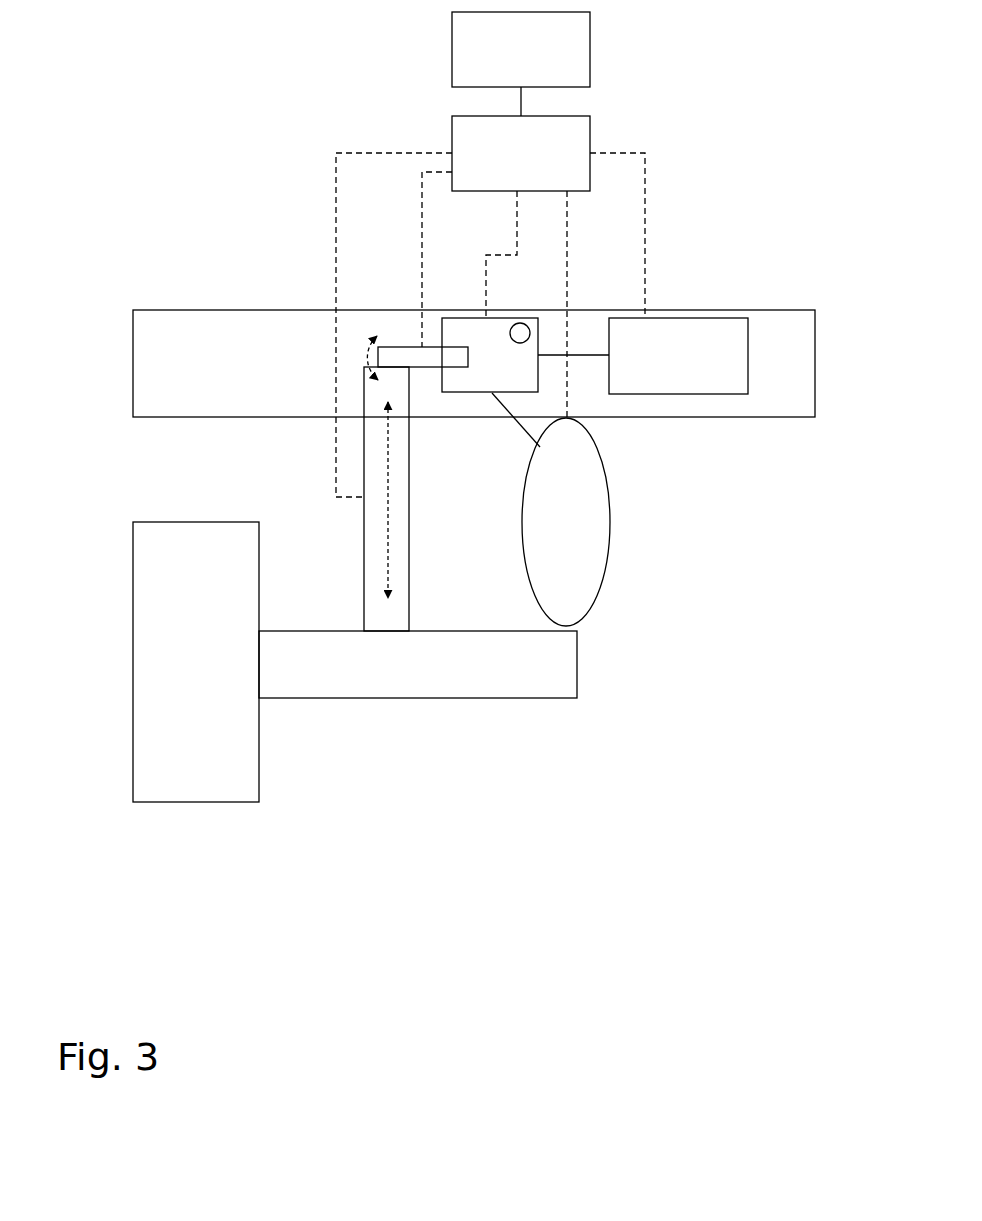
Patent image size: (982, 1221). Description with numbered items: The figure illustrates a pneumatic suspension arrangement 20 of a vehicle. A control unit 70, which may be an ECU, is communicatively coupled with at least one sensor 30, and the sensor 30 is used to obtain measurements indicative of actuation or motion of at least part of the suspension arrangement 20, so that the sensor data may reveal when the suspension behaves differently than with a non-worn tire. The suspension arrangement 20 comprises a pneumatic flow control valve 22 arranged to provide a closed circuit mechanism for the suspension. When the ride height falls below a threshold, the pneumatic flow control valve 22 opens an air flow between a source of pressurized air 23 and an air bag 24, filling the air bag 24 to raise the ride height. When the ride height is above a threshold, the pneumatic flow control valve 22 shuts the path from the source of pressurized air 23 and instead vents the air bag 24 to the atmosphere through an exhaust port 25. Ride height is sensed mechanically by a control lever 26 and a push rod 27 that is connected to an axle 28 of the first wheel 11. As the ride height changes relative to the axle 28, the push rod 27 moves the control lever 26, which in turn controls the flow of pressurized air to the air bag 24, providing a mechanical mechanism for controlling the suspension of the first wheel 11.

The control unit 70 is at (506, 63).
The sensor 30 is at (506, 169).
The suspension arrangement 20 is at (303, 269).
The pneumatic flow control valve 22 is at (485, 320).
The exhaust port 25 is at (517, 324).
The source of pressurized air 23 is at (707, 320).
The air bag 24 is at (608, 553).
The control lever 26 is at (401, 346).
The push rod 27 is at (365, 578).
The axle 28 is at (336, 647).
The first wheel 11 is at (178, 535).